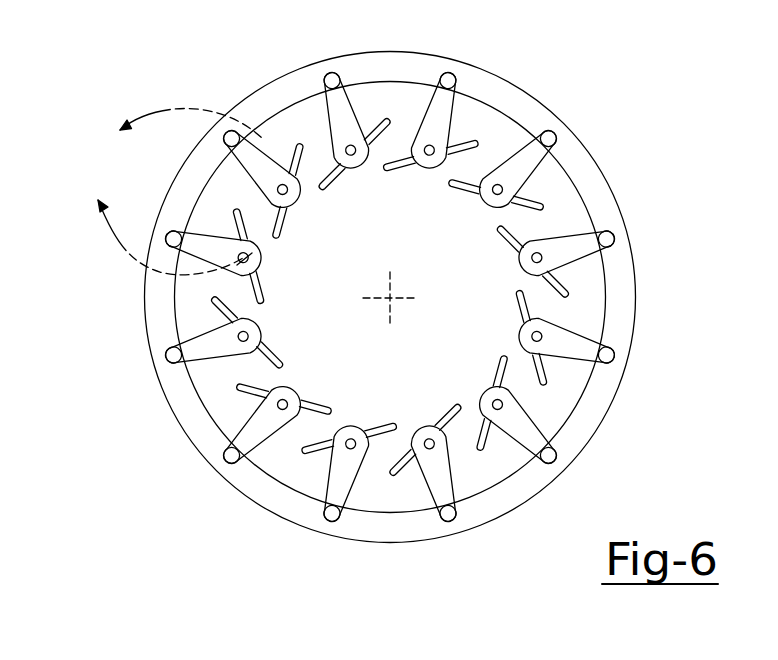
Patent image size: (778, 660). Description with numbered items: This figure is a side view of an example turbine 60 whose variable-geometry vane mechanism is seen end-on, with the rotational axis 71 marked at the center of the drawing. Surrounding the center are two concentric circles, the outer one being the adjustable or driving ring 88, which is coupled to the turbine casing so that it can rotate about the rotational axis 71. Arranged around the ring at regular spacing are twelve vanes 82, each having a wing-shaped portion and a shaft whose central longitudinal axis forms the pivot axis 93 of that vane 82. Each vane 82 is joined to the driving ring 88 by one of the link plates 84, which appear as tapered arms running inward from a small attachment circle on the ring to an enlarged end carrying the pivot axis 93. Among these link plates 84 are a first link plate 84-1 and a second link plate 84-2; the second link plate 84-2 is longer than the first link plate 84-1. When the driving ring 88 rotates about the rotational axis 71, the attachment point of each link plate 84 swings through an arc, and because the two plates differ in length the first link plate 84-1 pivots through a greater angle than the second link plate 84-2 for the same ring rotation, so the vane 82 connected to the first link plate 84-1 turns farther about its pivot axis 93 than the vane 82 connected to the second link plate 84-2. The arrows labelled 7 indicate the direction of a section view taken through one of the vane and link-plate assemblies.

The turbine 60 is at (155, 72).
The section line 7- 7 is at (176, 191).
The rotational axis 71 is at (390, 298).
The vane 82 is at (520, 238).
The link plate 84 is at (275, 443).
The first link plate 84-1 is at (207, 262).
The second link plate 84-2 is at (277, 172).
The driving ring 88 is at (523, 107).
The pivot axis 93 is at (493, 193).